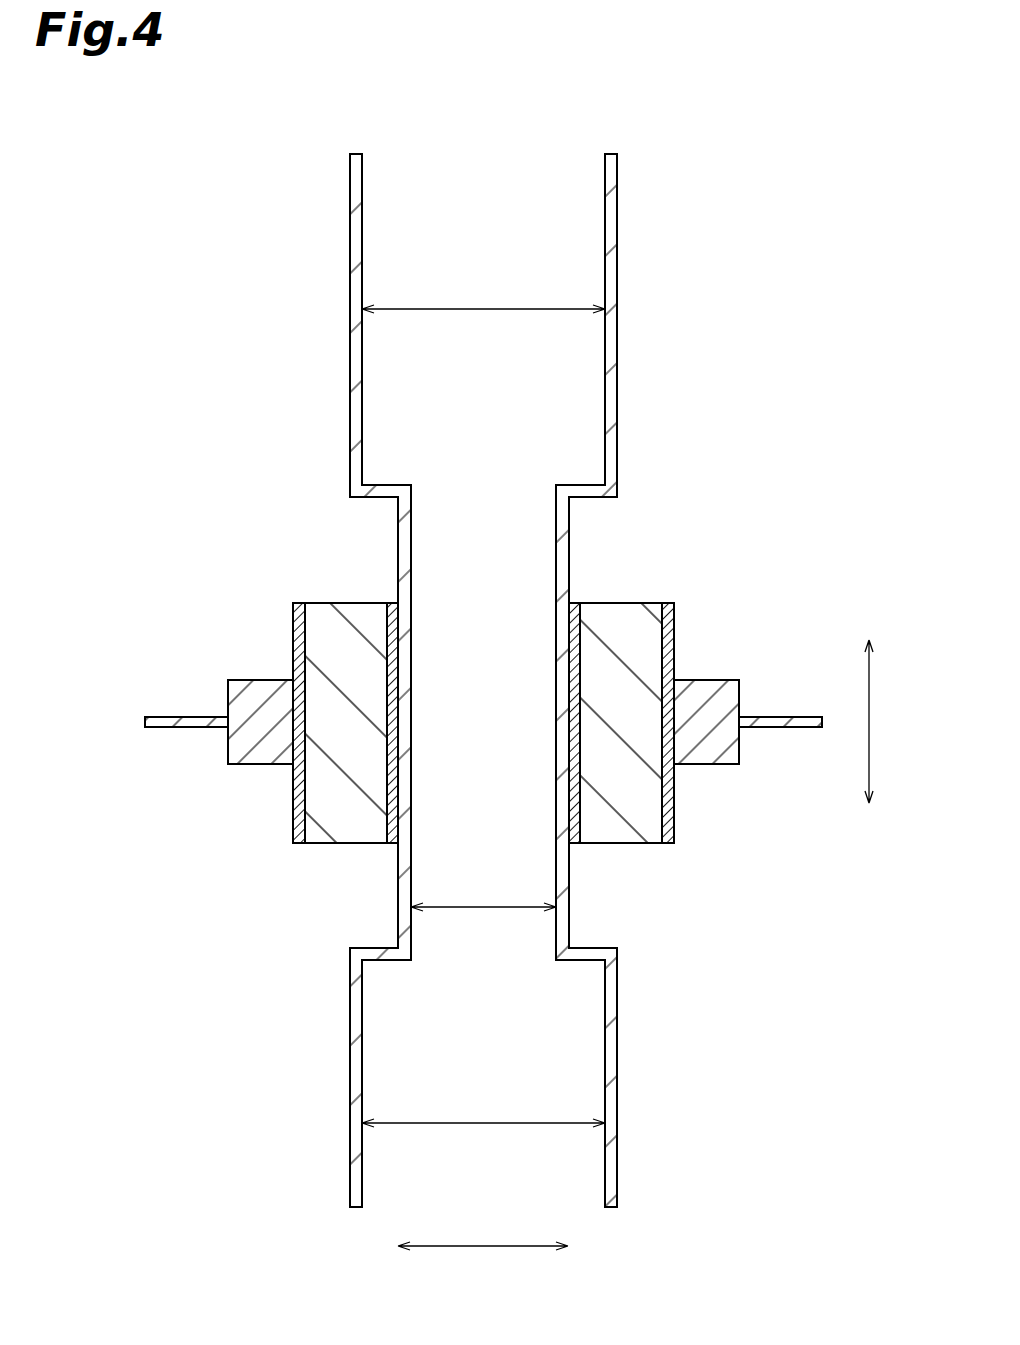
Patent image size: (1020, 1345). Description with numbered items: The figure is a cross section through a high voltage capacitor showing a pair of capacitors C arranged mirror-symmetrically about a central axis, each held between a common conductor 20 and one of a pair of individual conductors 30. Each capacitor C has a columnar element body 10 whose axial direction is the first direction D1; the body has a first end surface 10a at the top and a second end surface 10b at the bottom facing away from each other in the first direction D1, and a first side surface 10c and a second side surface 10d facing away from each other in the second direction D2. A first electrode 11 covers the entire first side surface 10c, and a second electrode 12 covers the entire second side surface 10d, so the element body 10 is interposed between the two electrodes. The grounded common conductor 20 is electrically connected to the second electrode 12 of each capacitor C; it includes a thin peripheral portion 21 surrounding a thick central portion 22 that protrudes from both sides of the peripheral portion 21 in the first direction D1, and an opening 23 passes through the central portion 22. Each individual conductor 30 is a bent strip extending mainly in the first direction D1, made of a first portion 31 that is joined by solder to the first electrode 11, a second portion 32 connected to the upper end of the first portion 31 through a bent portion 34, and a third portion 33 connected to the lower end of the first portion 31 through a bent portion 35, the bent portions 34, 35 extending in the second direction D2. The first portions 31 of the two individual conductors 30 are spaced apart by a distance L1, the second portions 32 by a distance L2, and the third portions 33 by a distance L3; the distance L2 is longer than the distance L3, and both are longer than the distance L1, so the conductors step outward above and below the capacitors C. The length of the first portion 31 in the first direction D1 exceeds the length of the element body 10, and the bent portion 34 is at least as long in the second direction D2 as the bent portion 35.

The element body 10 is at (325, 770).
The first end surface 10a is at (358, 603).
The second end surface 10b is at (325, 846).
The first side surface 10c is at (568, 662).
The second side surface 10d is at (297, 748).
The first electrode 11 is at (392, 800).
The second electrode 12 is at (300, 803).
The common conductor 20 is at (175, 717).
The peripheral portion 21 is at (793, 717).
The central portion 22 is at (718, 680).
The opening 23 is at (650, 660).
The individual conductor 30 is at (350, 210).
The first portion 31 is at (398, 520).
The second portion 32 is at (350, 268).
The third portion 33 is at (350, 1160).
The bent portion 34 is at (381, 485).
The bent portion 35 is at (387, 960).
The capacitor C is at (358, 846).
The distance L1 is at (483, 891).
The distance L2 is at (483, 295).
The distance L3 is at (483, 1108).
The first direction D1 is at (892, 721).
The second direction D2 is at (483, 1264).